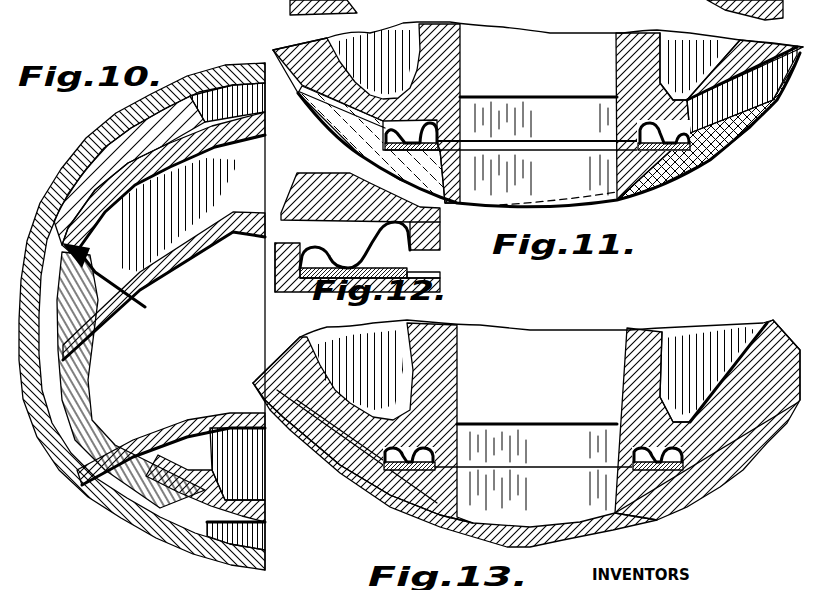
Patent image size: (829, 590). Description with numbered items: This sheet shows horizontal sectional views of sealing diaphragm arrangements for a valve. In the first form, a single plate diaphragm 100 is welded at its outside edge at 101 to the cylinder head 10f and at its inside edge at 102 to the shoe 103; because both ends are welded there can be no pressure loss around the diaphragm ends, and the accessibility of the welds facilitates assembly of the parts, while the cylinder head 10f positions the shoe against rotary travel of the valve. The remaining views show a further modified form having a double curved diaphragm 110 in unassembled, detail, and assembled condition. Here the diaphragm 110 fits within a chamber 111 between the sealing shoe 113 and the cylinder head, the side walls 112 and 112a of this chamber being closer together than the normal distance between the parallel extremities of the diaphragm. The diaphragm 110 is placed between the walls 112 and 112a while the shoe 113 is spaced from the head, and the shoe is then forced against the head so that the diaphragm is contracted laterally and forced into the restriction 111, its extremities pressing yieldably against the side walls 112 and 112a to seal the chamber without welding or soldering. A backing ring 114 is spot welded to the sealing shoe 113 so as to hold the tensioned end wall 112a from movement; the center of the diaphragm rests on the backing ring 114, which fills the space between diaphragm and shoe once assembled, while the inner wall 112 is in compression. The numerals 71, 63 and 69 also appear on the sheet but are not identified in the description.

In FIG. 11, the rim portion 71 is at (177, 0).
In FIG. 11, the wheel rim flange 63 is at (452, 57).
In FIG. 13, the wheel rim flange 63 is at (460, 358).
In FIG. 11, the rim section 69 is at (777, 62).
In FIG. 12, the rim section 69 is at (338, 192).
In FIG. 13, the rim section 69 is at (665, 332).
In FIG. 10, the diaphragm 100 is at (110, 306).
In FIG. 10, the outside edge weld 101 is at (97, 243).
In FIG. 10, the inside edge weld 102 is at (90, 347).
In FIG. 10, the shoe 103 is at (132, 432).
In FIG. 10, the cylinder head 10f is at (232, 222).
In FIG. 11, the diaphragm 110 is at (660, 118).
In FIG. 12, the diaphragm 110 is at (395, 272).
In FIG. 12, the chamber 111 is at (304, 258).
In FIG. 13, the chamber 111 is at (455, 422).
In FIG. 12, the side wall 112 is at (440, 224).
In FIG. 12, the end wall 112a is at (285, 278).
In FIG. 11, the sealing shoe 113 is at (733, 147).
In FIG. 12, the sealing shoe 113 is at (440, 288).
In FIG. 13, the sealing shoe 113 is at (455, 496).
In FIG. 12, the backing ring 114 is at (440, 275).